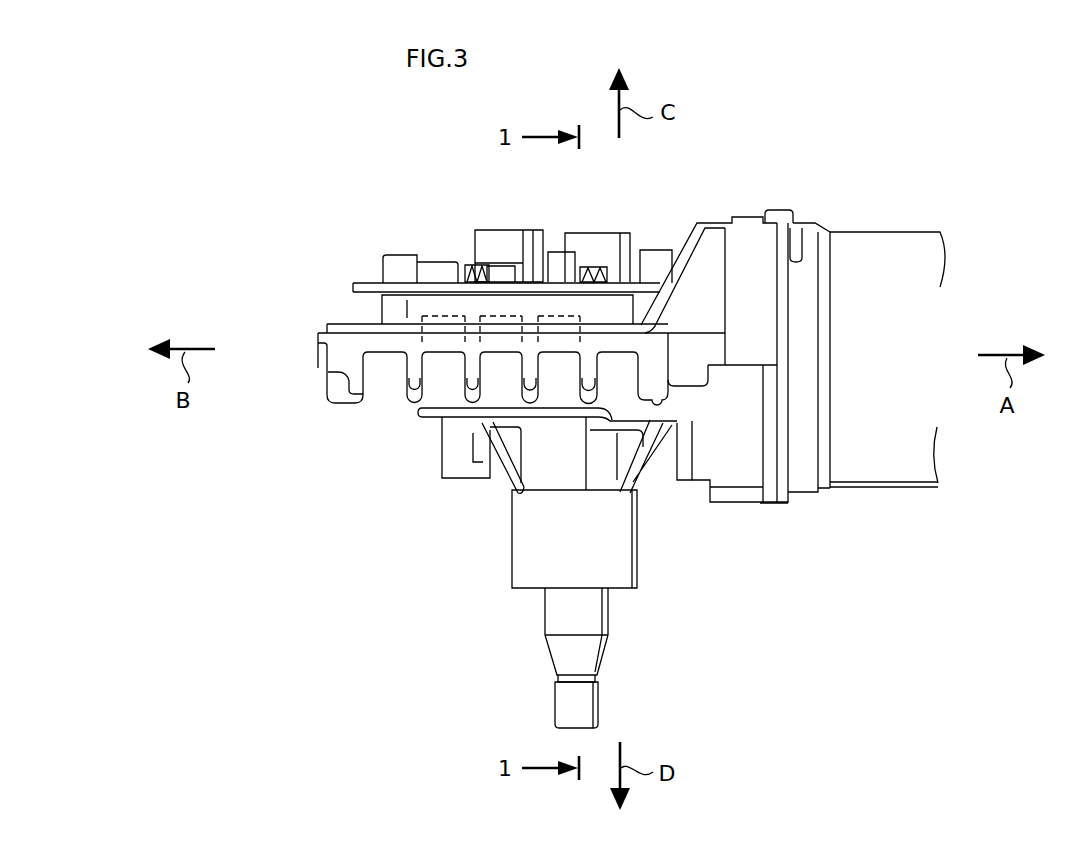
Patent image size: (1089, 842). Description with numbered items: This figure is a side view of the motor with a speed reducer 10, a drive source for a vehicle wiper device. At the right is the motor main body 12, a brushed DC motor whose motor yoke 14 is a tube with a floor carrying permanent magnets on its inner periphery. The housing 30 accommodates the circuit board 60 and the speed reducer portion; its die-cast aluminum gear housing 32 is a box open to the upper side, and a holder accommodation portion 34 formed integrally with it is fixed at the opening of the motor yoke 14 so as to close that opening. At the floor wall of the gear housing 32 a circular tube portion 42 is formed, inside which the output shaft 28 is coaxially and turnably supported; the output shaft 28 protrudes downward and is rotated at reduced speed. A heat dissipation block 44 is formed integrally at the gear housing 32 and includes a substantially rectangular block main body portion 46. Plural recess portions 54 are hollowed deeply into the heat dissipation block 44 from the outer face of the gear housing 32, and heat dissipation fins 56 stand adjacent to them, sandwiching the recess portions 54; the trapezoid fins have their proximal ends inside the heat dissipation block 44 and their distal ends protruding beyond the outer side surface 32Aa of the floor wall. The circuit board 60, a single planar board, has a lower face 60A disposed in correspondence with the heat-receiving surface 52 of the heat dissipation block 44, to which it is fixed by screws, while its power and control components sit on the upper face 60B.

The motor with a speed reducer 10 is at (824, 116).
The motor main body 12 is at (920, 223).
The motor yoke 14 is at (875, 231).
The output shaft 28 is at (545, 625).
The housing 30 is at (464, 317).
The gear housing 32 is at (314, 326).
The outer side surface of the floor wall 32Aa is at (427, 420).
The holder accommodation portion 34 is at (735, 463).
The tube portion 42 is at (640, 573).
The heat dissipation block 44 is at (388, 315).
The block main body portion 46 is at (617, 312).
The heat-receiving surface 52 is at (435, 293).
The recess portions 54 is at (549, 310).
The heat dissipation fins 56 is at (470, 393).
The circuit board 60 is at (362, 282).
The lower face 60A is at (358, 289).
The upper face 60B is at (400, 281).